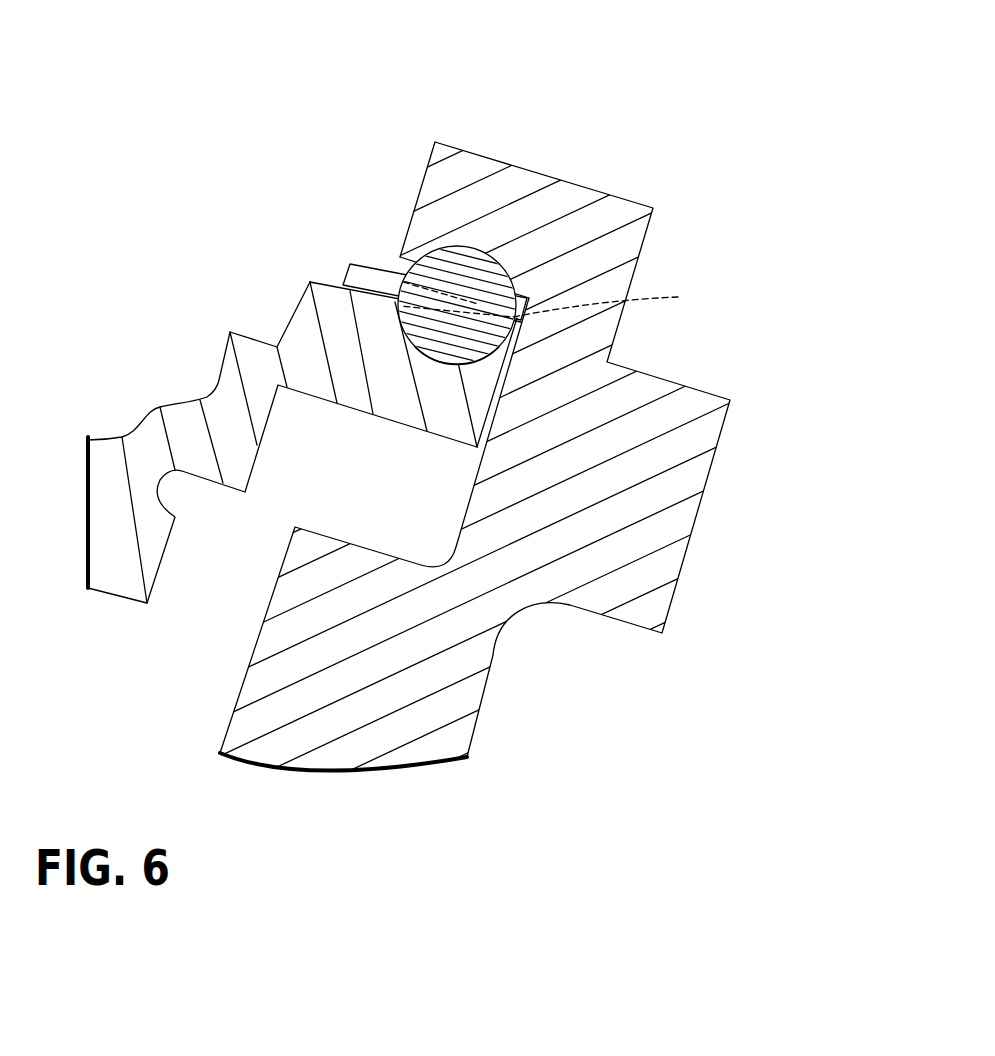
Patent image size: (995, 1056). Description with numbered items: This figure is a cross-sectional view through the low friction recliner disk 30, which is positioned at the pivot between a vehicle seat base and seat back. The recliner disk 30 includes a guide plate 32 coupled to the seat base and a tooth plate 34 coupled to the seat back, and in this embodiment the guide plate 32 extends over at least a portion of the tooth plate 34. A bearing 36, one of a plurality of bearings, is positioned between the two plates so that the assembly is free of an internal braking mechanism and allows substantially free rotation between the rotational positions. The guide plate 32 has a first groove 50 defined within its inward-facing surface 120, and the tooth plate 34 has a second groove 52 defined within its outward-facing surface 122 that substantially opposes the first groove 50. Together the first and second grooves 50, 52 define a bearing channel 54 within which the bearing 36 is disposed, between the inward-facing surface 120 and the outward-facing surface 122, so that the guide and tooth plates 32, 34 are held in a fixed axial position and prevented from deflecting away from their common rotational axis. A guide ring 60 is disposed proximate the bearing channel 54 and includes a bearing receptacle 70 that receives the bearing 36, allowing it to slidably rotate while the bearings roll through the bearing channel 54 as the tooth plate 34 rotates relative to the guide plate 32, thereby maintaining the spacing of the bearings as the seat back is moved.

The low friction recliner disk 30 is at (399, 515).
The guide plate 32 is at (657, 227).
The tooth plate 34 is at (120, 432).
The bearing 36 is at (462, 270).
The first groove 50 is at (460, 273).
The second groove 52 is at (437, 362).
The bearing channel 54 is at (517, 328).
The guide ring 60 is at (345, 283).
The bearing receptacle 70 is at (555, 299).
The inward-facing surface 120 is at (400, 258).
The outward-facing surface 122 is at (312, 282).